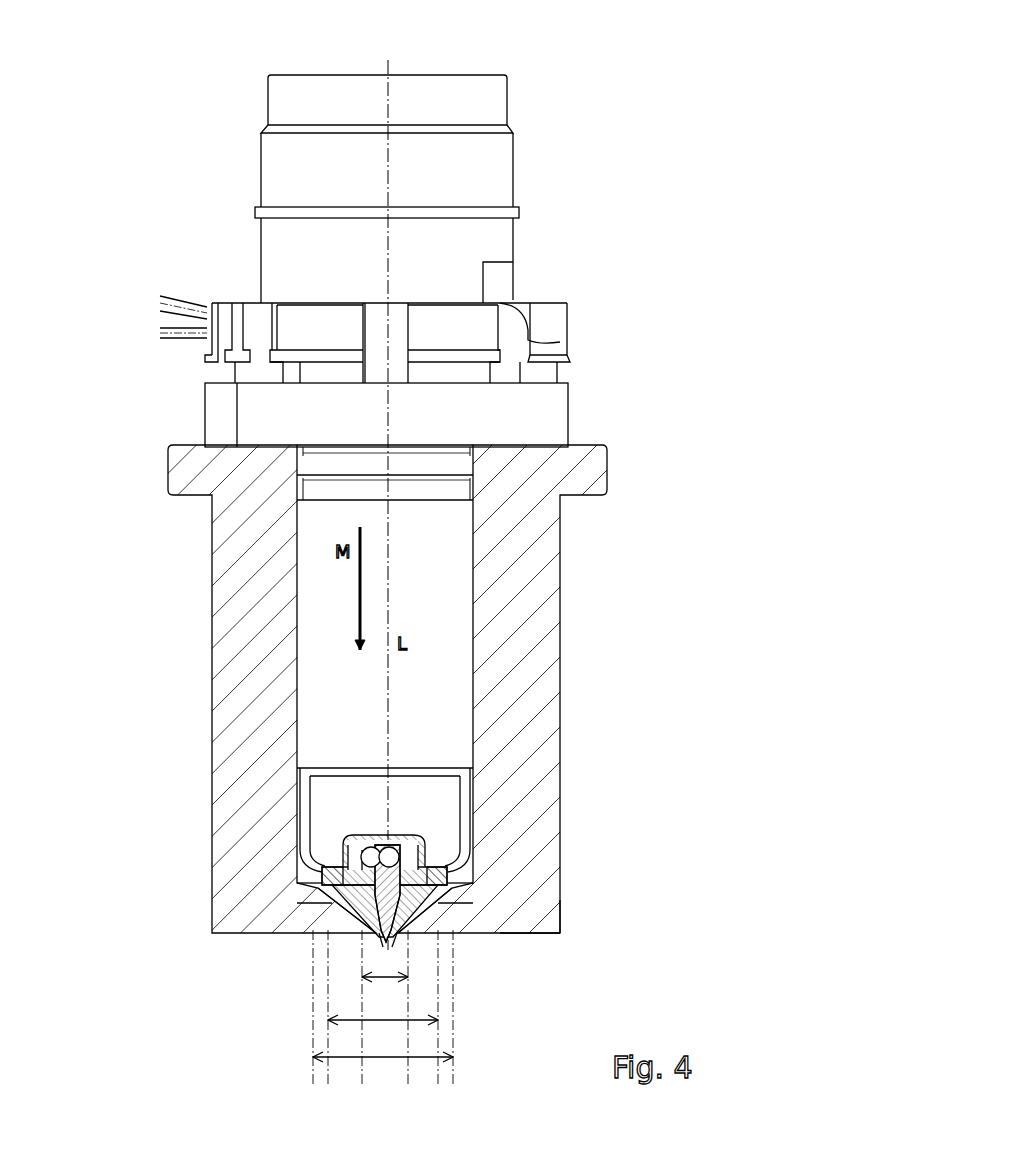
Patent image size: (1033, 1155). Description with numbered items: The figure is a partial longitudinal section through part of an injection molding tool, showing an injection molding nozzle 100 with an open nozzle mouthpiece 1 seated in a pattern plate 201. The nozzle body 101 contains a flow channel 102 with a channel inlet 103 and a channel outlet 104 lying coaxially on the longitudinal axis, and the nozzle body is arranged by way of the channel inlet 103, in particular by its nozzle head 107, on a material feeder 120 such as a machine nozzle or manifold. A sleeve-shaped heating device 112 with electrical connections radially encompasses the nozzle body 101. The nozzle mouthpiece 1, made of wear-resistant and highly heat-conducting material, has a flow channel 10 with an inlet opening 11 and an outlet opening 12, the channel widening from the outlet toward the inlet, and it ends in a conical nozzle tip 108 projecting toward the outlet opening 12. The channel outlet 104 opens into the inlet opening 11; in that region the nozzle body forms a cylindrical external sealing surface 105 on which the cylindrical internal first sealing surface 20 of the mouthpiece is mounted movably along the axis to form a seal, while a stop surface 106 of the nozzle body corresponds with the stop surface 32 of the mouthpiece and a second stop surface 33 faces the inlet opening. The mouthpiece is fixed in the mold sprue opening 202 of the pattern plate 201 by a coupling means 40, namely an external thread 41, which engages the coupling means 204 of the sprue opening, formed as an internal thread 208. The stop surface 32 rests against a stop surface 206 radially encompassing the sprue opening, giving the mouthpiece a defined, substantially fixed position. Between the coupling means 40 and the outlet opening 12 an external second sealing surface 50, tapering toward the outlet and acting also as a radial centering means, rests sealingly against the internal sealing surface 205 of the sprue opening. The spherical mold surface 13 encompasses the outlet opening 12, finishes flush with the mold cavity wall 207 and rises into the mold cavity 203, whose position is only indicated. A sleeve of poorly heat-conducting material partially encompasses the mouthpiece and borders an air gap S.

The material feeder 120 is at (411, 22).
The channel inlet 103 is at (399, 73).
The injection molding nozzle 100 is at (517, 187).
The nozzle head 107 is at (487, 247).
The heating device 112 is at (178, 298).
The nozzle body 101 is at (438, 609).
The pattern plate 201 is at (250, 774).
The mold sprue opening 202 is at (520, 789).
The air gap S is at (470, 797).
The conical nozzle tip 108 is at (433, 838).
The first sealing surface 20 is at (535, 845).
The external sealing surface 105 is at (432, 862).
The second stop surface 33 is at (560, 882).
The stop surface 106 is at (450, 884).
The flow channel 10 is at (448, 907).
The nozzle mouthpiece 1 is at (546, 940).
The mold cavity wall 207 is at (546, 942).
The flow channel 102 is at (266, 850).
The channel outlet 104 is at (317, 878).
The coupling means 40 is at (187, 894).
The external thread 41 is at (187, 894).
The coupling means 204 is at (187, 894).
The internal thread 208 is at (313, 888).
The inlet opening 11 is at (348, 910).
The stop surface 32 is at (317, 947).
The stop surface 206 is at (355, 923).
The outlet opening 12 is at (383, 942).
The mold surface 13 is at (398, 942).
The second sealing surface 50 is at (453, 922).
The internal sealing surface 205 is at (412, 933).
The mold cavity 203 is at (283, 1072).